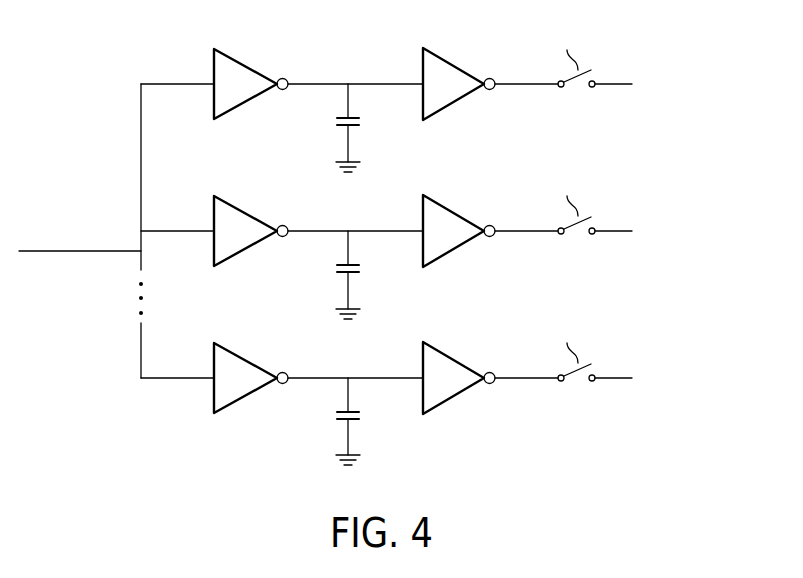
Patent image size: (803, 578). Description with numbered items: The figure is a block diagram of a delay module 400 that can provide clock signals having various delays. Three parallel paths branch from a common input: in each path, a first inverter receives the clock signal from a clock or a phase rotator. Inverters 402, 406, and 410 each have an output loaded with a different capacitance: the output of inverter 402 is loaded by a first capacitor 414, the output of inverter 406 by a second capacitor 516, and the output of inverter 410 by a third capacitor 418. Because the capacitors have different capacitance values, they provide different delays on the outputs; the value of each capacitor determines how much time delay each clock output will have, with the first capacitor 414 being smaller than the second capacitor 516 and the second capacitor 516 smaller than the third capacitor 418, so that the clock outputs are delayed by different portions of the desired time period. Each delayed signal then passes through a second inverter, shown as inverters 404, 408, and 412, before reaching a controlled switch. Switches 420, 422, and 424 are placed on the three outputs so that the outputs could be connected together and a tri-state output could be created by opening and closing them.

The delay module 400 is at (696, 149).
The inverter 402 is at (245, 62).
The second inverter of first delay stage 404 is at (455, 62).
The inverter 406 is at (245, 209).
The second inverter of second delay stage 408 is at (455, 209).
The inverter 410 is at (245, 357).
The second inverter of third delay stage 412 is at (455, 357).
The capacitor C1 414 is at (338, 121).
The capacitor C2 516 is at (338, 268).
The capacitor C3 418 is at (338, 414).
The switch 420 is at (596, 74).
The switch 422 is at (596, 221).
The switch 424 is at (596, 368).